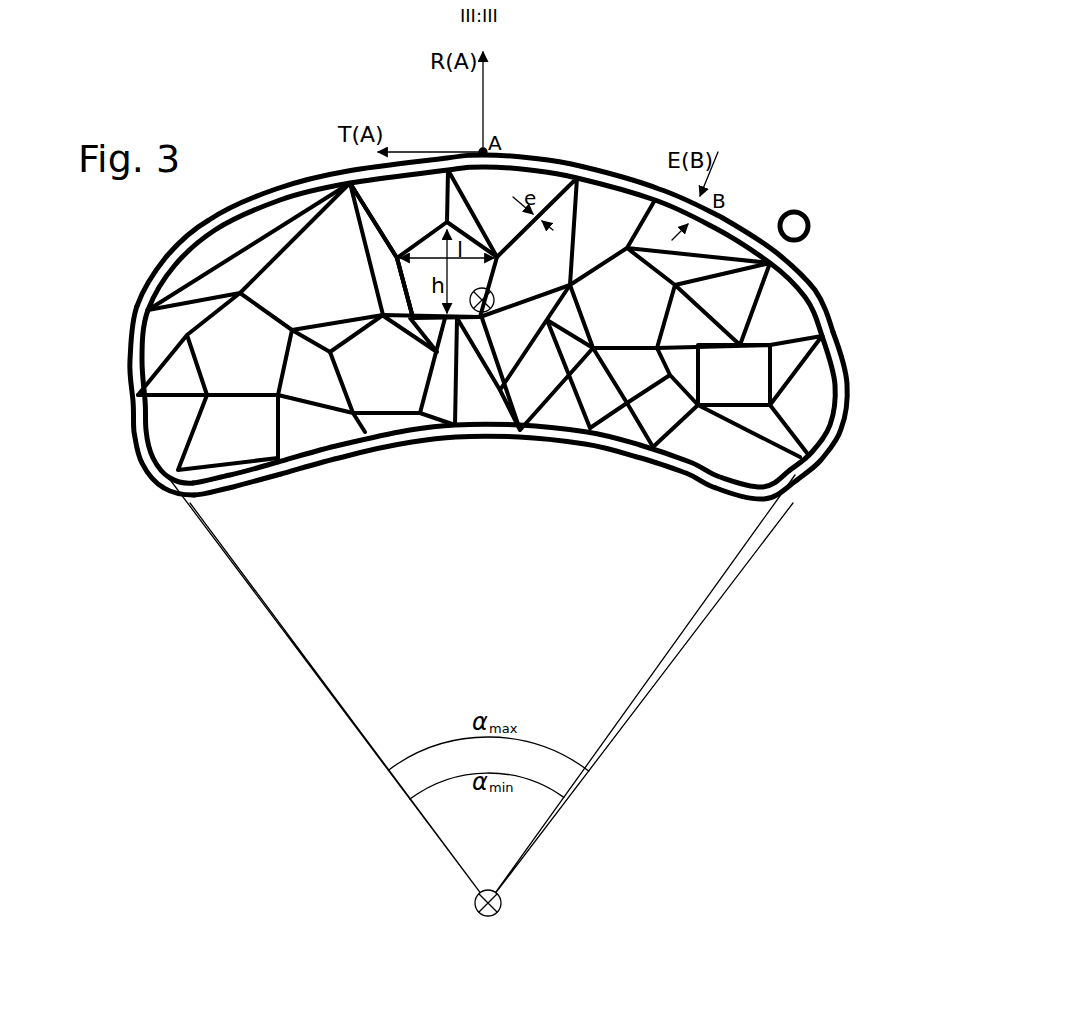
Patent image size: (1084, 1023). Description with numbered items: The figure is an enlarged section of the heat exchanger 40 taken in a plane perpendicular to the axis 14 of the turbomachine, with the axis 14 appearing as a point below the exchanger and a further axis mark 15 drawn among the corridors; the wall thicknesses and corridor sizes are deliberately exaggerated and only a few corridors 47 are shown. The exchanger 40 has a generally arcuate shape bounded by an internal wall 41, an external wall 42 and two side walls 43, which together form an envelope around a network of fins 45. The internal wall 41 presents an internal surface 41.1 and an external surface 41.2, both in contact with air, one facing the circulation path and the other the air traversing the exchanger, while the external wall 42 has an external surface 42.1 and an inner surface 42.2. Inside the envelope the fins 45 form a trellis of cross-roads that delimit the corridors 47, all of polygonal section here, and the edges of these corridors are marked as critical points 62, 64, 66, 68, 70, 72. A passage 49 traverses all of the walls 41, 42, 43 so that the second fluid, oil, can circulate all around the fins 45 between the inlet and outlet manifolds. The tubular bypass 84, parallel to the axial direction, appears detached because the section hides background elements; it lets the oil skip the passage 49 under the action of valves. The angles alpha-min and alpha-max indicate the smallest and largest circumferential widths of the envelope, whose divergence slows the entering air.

The axis 14 is at (476, 907).
The axis 15 is at (494, 300).
The heat exchanger 40 is at (413, 498).
The internal wall 41 is at (539, 461).
The internal surface of the internal wall 41.1 is at (611, 450).
The external surface of the internal wall 41.2 is at (490, 408).
The external wall 42 is at (566, 148).
The external surface of the external wall 42.1 is at (628, 177).
The inner surface of upper wall 42.2 is at (596, 192).
The side wall 43 is at (858, 380).
The fins 45 is at (311, 323).
The corridors 47 is at (555, 270).
The passage 49 is at (833, 420).
The critical point 62 is at (240, 293).
The critical point 64 is at (292, 333).
The critical point 66 is at (383, 315).
The critical point 68 is at (447, 222).
The critical point 70 is at (397, 258).
The critical point 72 is at (413, 318).
The bypass 84 is at (808, 215).